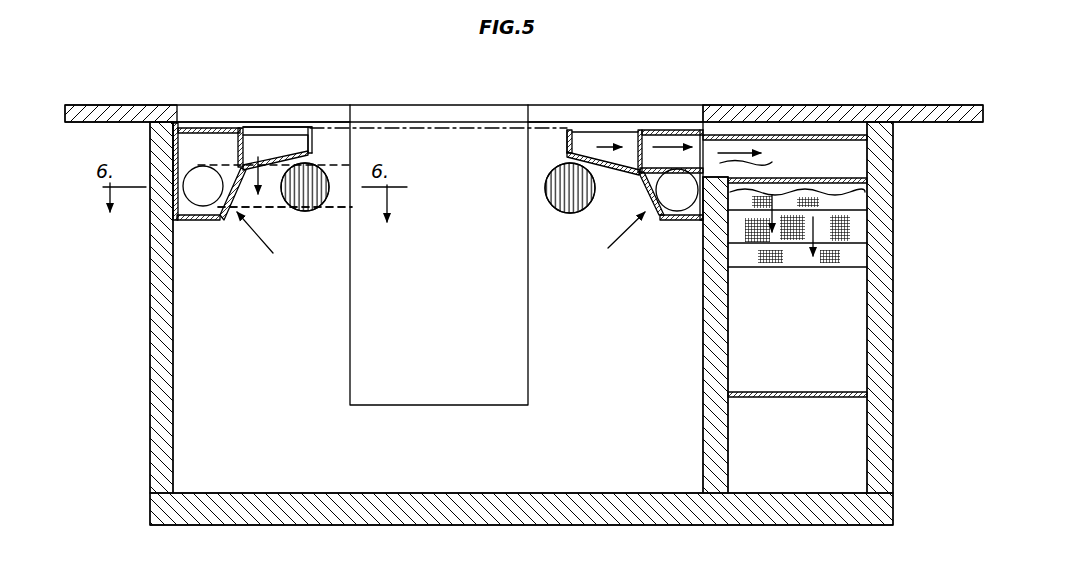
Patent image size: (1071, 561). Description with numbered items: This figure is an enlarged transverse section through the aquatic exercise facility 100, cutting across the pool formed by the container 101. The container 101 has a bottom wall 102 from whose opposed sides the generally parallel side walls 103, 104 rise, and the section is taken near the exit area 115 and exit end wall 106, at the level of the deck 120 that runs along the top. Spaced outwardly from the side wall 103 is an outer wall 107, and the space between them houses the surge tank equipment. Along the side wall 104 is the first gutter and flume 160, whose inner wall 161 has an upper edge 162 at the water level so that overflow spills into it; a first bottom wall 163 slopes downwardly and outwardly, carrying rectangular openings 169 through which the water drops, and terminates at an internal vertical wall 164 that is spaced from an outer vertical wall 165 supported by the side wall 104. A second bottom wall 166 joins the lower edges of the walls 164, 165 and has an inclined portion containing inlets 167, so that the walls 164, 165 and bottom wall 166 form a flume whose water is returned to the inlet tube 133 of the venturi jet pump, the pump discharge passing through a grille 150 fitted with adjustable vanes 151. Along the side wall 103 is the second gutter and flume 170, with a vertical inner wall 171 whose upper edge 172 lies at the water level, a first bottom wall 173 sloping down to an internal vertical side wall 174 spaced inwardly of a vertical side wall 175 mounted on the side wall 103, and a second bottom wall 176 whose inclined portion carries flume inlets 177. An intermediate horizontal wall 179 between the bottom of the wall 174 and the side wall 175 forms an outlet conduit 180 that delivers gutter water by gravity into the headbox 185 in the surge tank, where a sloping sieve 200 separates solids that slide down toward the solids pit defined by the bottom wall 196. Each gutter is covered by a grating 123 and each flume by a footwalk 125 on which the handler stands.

The aquatic exercise facility 100 is at (112, 36).
The container 101 is at (148, 320).
The bottom wall 102 is at (312, 493).
The side wall 103 is at (705, 345).
The side wall 104 is at (150, 405).
The exit end wall 106 is at (268, 328).
The outer wall 107 is at (893, 340).
The exit area 115 is at (430, 146).
The deck 120 is at (101, 104).
The grating 123 is at (282, 127).
The footwalk 125 is at (198, 128).
The inlet tube 133 is at (190, 193).
The grille 150 is at (300, 208).
The vanes 151 is at (323, 189).
The first gutter and flume 160 is at (222, 238).
The inner wall 161 is at (312, 147).
The upper edge 162 is at (313, 127).
The first bottom wall 163 is at (273, 201).
The internal vertical wall 164 is at (238, 150).
The outer vertical wall 165 is at (173, 148).
The second bottom wall 166 is at (193, 220).
The inlets 167 is at (226, 214).
The rectangular openings 169 is at (275, 164).
The second gutter and flume 170 is at (547, 144).
The vertical inner wall 171 is at (567, 150).
The upper edge 172 is at (568, 128).
The first bottom wall 173 is at (610, 168).
The internal vertical side wall 174 is at (641, 131).
The vertical side wall 175 is at (700, 200).
The second bottom wall 176 is at (673, 221).
The flume inlets 177 is at (641, 195).
The intermediate horizontal wall 179 is at (653, 168).
The outlet conduit 180 is at (762, 153).
The headbox 185 is at (850, 178).
The bottom wall 196 is at (812, 392).
The sieve 200 is at (852, 232).